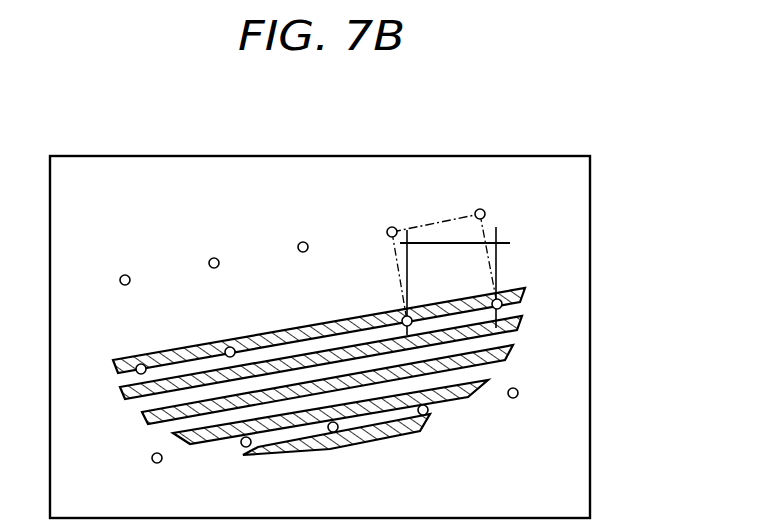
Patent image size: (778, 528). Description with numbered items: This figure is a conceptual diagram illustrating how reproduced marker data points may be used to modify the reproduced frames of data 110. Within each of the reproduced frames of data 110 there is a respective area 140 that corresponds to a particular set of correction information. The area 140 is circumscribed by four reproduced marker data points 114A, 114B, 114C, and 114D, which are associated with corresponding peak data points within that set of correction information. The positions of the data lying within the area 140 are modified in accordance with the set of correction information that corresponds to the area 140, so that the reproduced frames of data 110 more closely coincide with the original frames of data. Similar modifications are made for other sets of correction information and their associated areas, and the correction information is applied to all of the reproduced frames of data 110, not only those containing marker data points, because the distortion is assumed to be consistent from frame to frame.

The reproduced frames of data 110 is at (74, 156).
The area 140 is at (418, 224).
The reproduced marker data point 114A is at (485, 214).
The reproduced marker data point 114B is at (502, 304).
The reproduced marker data point 114C is at (405, 326).
The reproduced marker data point 114D is at (389, 229).